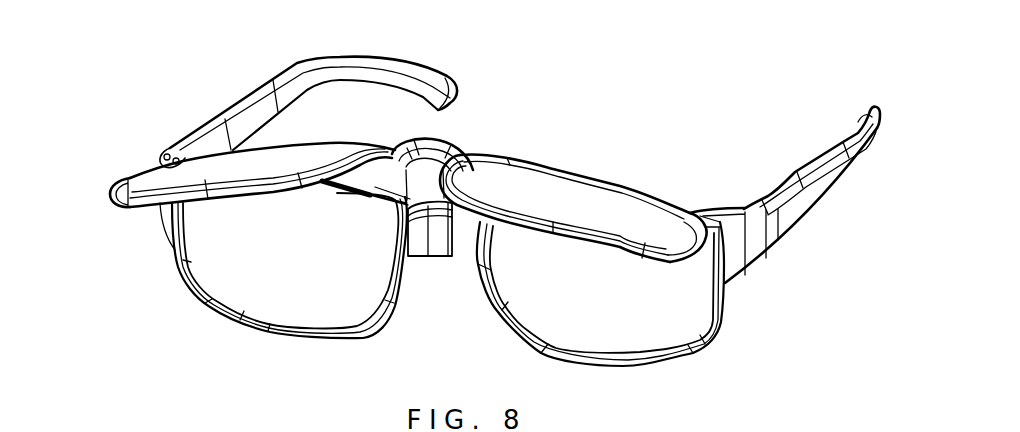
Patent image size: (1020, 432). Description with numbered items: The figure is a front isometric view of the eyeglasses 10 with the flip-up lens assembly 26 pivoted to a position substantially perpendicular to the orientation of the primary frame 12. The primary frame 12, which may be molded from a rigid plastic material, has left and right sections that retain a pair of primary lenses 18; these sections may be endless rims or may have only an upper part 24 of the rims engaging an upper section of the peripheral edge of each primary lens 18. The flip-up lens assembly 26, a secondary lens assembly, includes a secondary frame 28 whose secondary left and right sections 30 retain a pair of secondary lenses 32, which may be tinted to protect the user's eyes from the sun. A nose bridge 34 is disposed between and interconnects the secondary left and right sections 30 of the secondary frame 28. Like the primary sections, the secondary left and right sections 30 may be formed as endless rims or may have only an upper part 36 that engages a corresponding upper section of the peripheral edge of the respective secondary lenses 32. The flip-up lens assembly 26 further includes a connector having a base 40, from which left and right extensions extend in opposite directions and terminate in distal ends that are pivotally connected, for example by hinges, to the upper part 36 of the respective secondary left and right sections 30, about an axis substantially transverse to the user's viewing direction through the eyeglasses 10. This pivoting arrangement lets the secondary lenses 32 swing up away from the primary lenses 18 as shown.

The eyeglasses 10 is at (673, 80).
The primary frame 12 is at (703, 203).
The primary lenses 18 is at (320, 271).
The upper part of the rims 24 is at (317, 343).
The flip-up lens assembly 26 is at (117, 170).
The secondary frame 28 is at (112, 209).
The secondary left and right sections 30 is at (283, 141).
The secondary lenses 32 is at (160, 175).
The nose bridge 34 is at (452, 143).
The upper part 36 is at (323, 142).
The base 40 is at (437, 246).